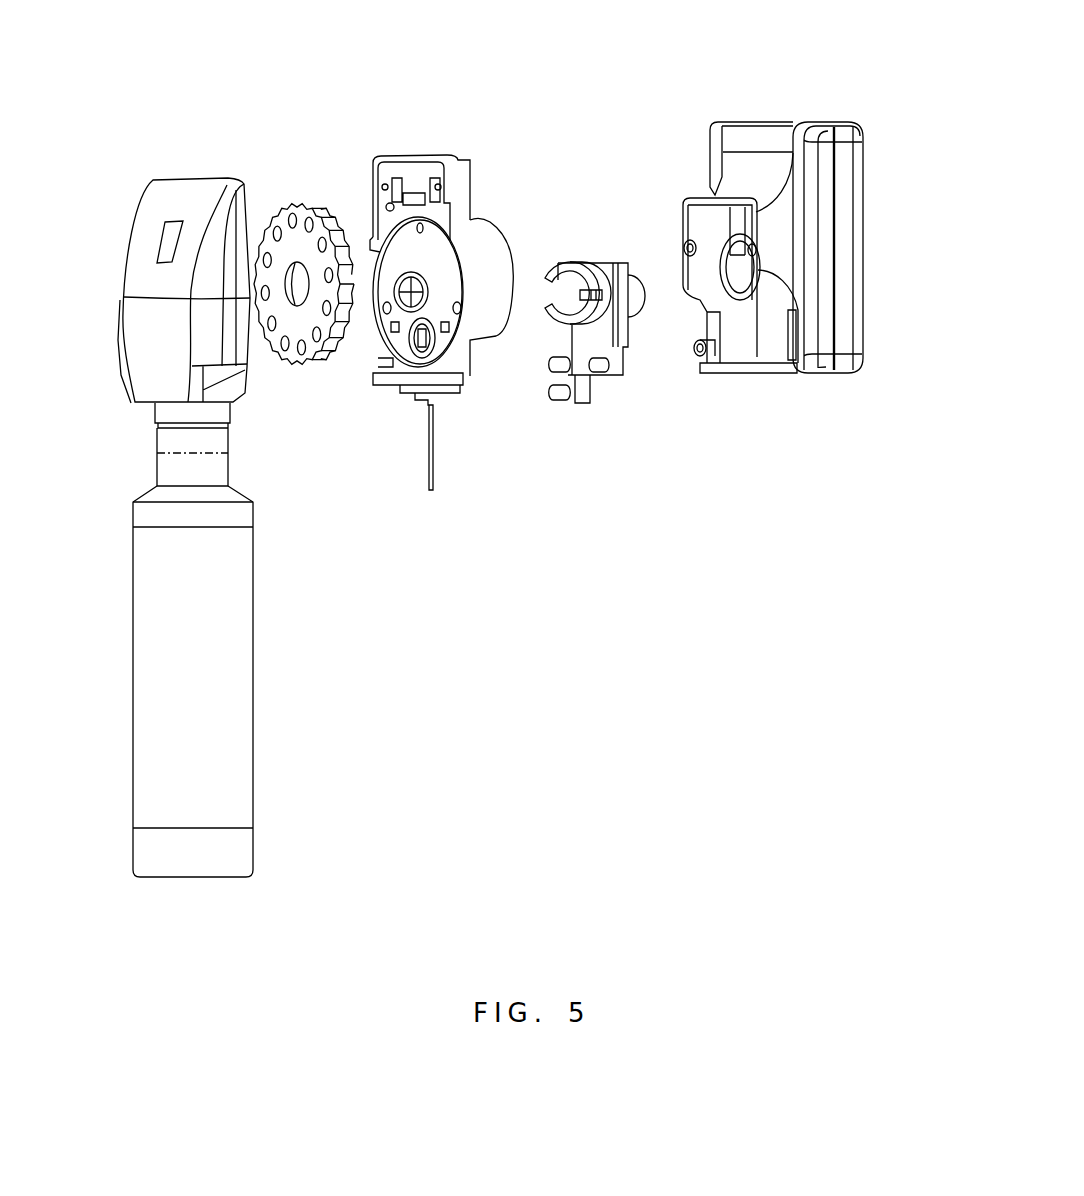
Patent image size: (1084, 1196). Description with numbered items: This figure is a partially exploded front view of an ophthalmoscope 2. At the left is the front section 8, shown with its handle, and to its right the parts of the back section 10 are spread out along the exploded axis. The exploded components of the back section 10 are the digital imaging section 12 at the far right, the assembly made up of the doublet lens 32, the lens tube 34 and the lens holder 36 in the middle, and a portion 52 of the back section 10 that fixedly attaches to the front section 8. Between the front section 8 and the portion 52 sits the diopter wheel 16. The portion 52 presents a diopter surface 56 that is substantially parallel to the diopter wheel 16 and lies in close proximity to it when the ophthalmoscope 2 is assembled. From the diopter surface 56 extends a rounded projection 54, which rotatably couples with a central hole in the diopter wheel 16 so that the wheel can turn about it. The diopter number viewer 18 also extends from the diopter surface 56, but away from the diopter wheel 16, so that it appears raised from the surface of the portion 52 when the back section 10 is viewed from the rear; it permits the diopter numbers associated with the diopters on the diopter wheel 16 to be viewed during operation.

The ophthalmoscope 2 is at (328, 118).
The front section 8 is at (175, 190).
The back section 10 is at (714, 126).
The digital imaging section 12 is at (770, 352).
The diopter wheel 16 is at (310, 355).
The diopter number viewer 18 is at (420, 343).
The doublet lens 32 is at (567, 306).
The lens tube 34 is at (592, 313).
The lens holder 36 is at (618, 320).
The portion of the back section 52 is at (470, 331).
The rounded projection 54 is at (405, 302).
The diopter surface 56 is at (418, 292).